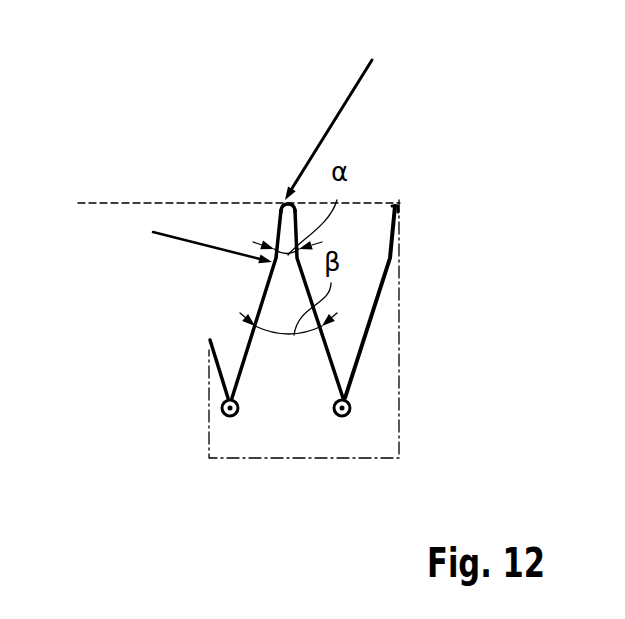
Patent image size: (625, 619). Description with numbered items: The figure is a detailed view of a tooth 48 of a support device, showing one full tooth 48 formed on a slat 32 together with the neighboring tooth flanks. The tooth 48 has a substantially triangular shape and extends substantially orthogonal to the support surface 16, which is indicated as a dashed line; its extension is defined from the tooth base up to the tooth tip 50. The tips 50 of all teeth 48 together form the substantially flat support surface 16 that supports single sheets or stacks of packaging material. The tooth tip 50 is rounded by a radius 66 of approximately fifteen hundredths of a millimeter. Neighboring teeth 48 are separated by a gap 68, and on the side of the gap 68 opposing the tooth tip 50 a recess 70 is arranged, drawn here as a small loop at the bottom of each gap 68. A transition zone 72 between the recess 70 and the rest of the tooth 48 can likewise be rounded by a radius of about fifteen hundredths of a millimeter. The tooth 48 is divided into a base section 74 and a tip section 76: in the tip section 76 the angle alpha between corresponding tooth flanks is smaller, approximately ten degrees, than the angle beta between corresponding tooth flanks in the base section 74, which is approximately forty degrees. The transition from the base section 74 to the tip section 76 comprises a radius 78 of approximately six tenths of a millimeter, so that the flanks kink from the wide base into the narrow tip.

The support surface 16 is at (133, 203).
The slat 32 is at (383, 393).
The tooth 48 is at (293, 102).
The tooth tip 50 is at (283, 203).
The radius 66 is at (376, 72).
The gap 68 is at (220, 342).
The recess 70 is at (229, 418).
The transition zone 72 is at (249, 405).
The base section 74 is at (134, 391).
The tip section 76 is at (129, 222).
The radius 78 is at (184, 240).